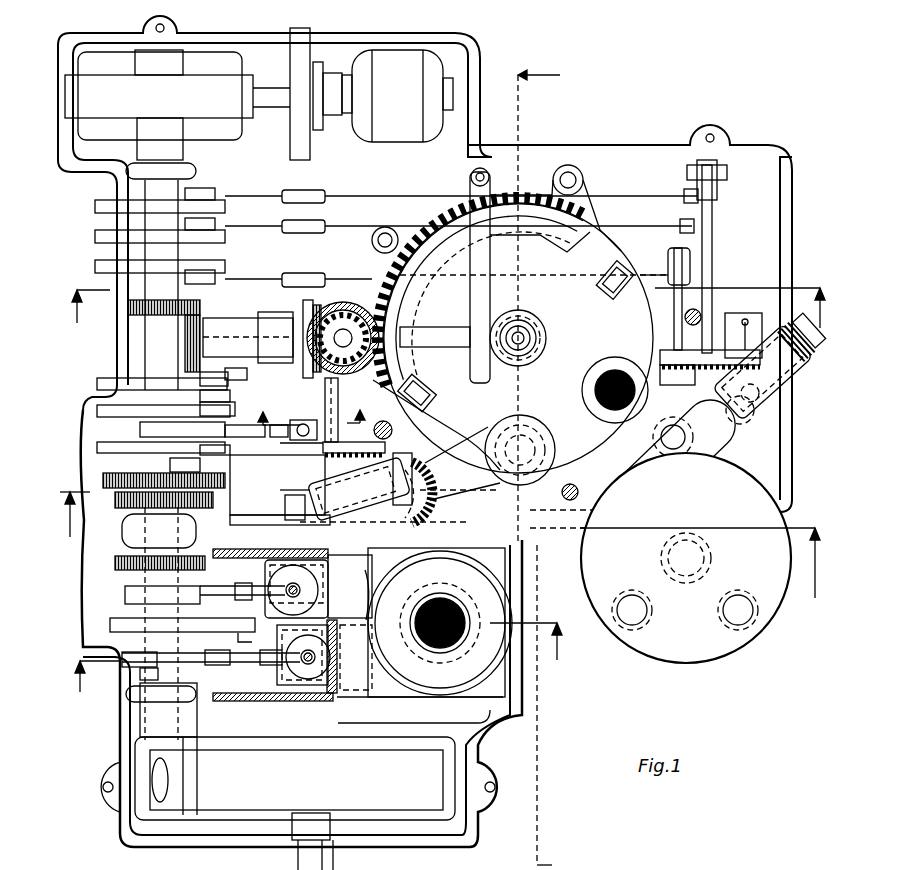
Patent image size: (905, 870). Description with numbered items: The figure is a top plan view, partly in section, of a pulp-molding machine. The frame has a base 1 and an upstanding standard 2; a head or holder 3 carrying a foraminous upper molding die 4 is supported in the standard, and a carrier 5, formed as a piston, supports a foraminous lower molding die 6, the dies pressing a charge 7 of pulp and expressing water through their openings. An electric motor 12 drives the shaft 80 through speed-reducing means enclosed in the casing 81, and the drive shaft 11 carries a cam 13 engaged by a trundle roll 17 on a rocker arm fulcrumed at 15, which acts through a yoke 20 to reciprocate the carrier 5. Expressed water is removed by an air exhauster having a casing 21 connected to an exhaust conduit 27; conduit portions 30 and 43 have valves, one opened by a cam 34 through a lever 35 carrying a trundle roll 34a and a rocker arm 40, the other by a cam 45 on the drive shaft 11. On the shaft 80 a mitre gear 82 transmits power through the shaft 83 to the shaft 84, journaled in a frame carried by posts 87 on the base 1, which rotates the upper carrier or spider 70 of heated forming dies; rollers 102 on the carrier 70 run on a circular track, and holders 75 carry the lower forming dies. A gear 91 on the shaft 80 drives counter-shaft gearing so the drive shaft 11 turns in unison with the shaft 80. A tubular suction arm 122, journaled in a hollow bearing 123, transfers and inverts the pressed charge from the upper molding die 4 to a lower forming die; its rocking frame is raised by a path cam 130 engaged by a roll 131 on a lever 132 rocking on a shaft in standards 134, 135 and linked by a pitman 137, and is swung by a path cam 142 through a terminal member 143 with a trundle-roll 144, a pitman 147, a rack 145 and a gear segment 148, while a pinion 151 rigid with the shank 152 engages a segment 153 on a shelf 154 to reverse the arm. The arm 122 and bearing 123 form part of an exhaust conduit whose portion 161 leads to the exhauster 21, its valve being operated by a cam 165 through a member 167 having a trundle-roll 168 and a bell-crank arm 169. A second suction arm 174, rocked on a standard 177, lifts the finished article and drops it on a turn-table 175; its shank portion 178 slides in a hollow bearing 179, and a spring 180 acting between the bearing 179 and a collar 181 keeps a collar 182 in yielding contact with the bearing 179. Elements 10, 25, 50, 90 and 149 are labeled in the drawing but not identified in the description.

The base 1 is at (497, 562).
The standard 2 is at (350, 700).
The head or holder 3 is at (549, 467).
The foraminous upper molding die 4 is at (318, 669).
The carrier 5 is at (443, 558).
The foraminous lower molding die 6 is at (451, 319).
The charge of pulp 7 is at (315, 408).
The drum 10 is at (467, 623).
The drive shaft 11 is at (150, 745).
The electric motor 12 is at (413, 128).
The cam 13 is at (110, 625).
The fulcrum of rocker arm 15 is at (239, 645).
The trundle roll 17 is at (223, 624).
The yoke 20 is at (207, 863).
The casing of air exhauster 21 is at (296, 780).
The wedge 25 is at (340, 590).
The exhaust conduit 27 is at (300, 713).
The conduit portion 30 is at (300, 665).
The cam 34 is at (150, 658).
The trundle roll 34a is at (160, 670).
The lever 35 is at (217, 673).
The rocker arm 40 is at (211, 673).
The conduit portion 43 is at (290, 578).
The cam 45 is at (128, 592).
The drum flange 50 is at (493, 653).
The upper carrier or spider 70 is at (613, 335).
The holder 75 is at (648, 395).
The shaft 80 is at (158, 330).
The casing 81 is at (159, 96).
The mitre gear 82 is at (130, 305).
The shaft 83 is at (240, 333).
The shaft 84 is at (350, 290).
The posts 87 is at (386, 236).
The shaft bearing 90 is at (143, 528).
The gear 91 is at (196, 505).
The rollers 102 is at (617, 272).
The suction arm 122 is at (490, 457).
The hollow bearing 123 is at (325, 512).
The path cam 130 is at (100, 410).
The roll 131 is at (138, 428).
The lever 132 is at (228, 405).
The standard 134 is at (300, 492).
The standard 135 is at (218, 376).
The pitman 137 is at (245, 435).
The path cam 142 is at (100, 448).
The terminal member 143 is at (172, 464).
The trundle-roll 144 is at (230, 450).
The rack 145 is at (305, 495).
The pitman 147 is at (283, 435).
The gear segment 148 is at (393, 435).
The rack 149 is at (364, 440).
The pinion 151 is at (445, 452).
The shank 152 is at (425, 515).
The segment 153 is at (425, 498).
The shelf 154 is at (402, 520).
The exhaust conduit portion 161 is at (300, 470).
The cam 165 is at (100, 384).
The member 167 is at (195, 378).
The trundle-roll 168 is at (233, 377).
The bell-crank arm 169 is at (303, 417).
The suction arm 174 is at (685, 478).
The turn-table 175 is at (766, 616).
The standard 177 is at (785, 418).
The shank portion 178 is at (715, 438).
The hollow bearing 179 is at (797, 376).
The spring 180 is at (797, 322).
The collar 181 is at (818, 344).
The collar 182 is at (778, 430).